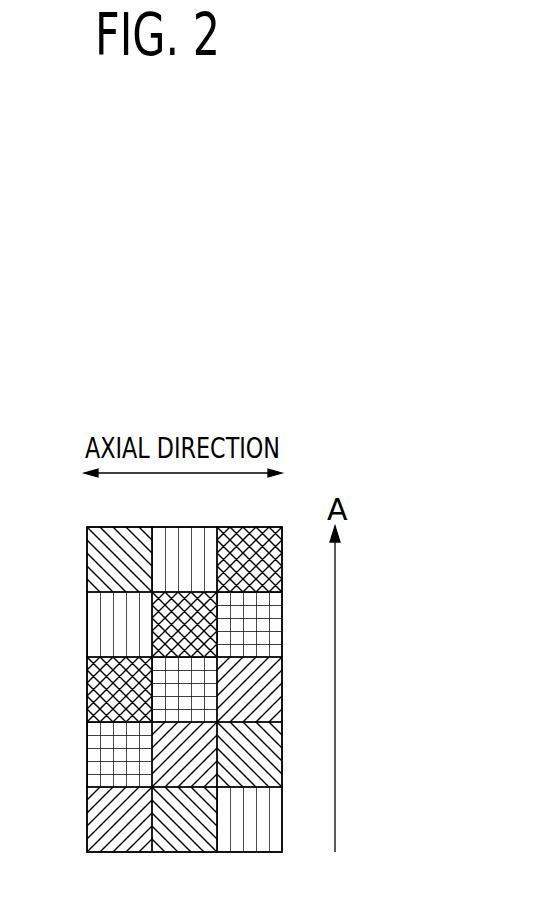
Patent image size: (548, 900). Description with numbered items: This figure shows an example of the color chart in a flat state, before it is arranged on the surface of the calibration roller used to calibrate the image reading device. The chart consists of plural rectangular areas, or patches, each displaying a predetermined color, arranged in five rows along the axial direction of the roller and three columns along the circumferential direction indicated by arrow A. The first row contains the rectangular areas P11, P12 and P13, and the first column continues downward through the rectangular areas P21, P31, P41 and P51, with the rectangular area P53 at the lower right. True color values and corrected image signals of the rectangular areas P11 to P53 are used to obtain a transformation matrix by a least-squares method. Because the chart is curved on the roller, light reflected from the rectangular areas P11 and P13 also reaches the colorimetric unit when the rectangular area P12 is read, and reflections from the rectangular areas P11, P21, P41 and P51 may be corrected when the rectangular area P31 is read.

The rectangular area P11 is at (96, 555).
The rectangular area P12 is at (182, 532).
The rectangular area P13 is at (246, 532).
The rectangular area P21 is at (96, 620).
The rectangular area P31 is at (96, 687).
The rectangular area P41 is at (96, 752).
The rectangular area P51 is at (96, 815).
The rectangular area P53 is at (281, 806).